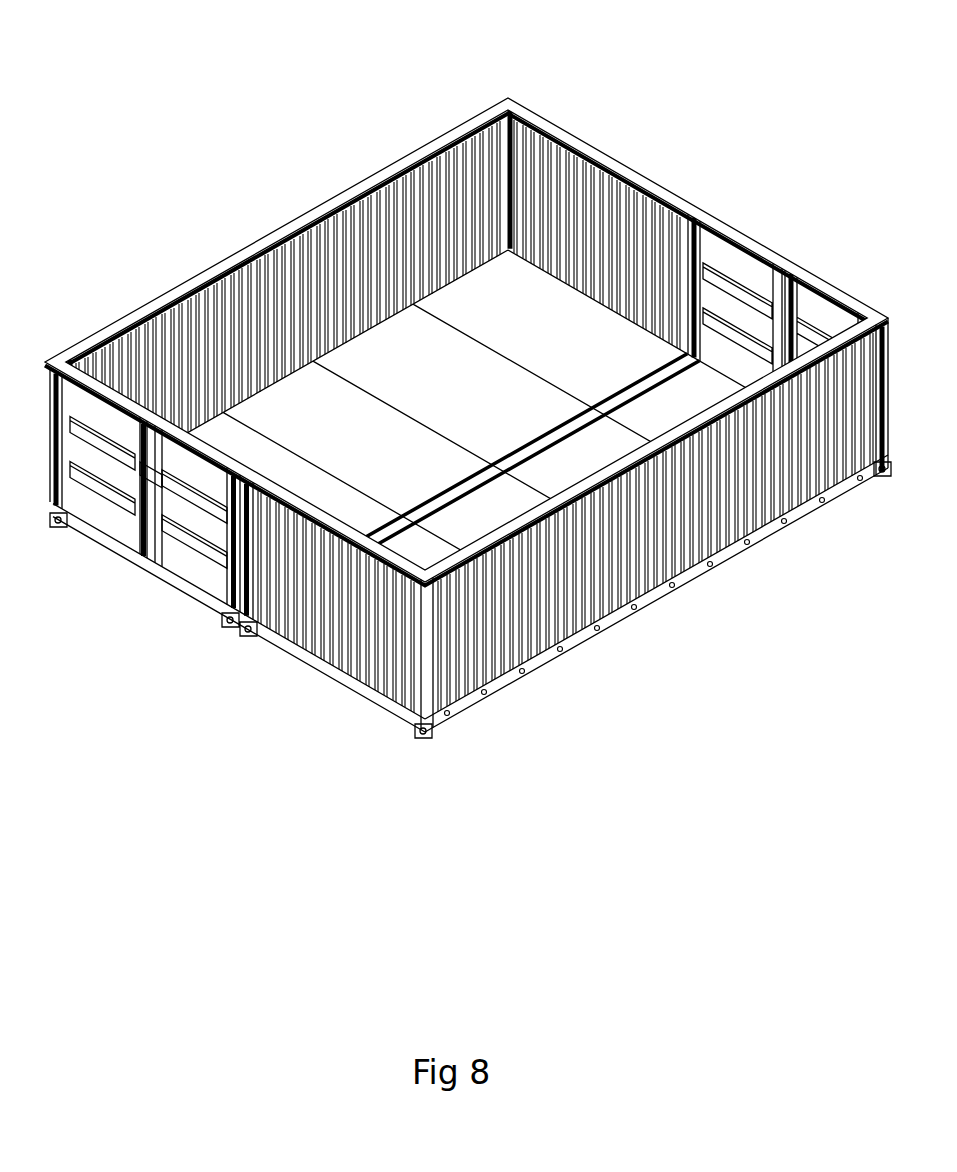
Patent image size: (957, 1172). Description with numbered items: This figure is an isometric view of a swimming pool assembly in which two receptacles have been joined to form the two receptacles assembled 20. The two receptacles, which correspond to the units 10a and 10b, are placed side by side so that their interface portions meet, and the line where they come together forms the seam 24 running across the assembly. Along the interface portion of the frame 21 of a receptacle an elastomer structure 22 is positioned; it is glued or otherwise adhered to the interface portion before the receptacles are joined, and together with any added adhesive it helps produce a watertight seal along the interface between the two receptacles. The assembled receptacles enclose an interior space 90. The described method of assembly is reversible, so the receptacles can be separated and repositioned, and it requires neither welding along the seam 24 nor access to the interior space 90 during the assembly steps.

The two receptacles assembled 20 is at (460, 390).
The frame 21 is at (262, 242).
The seam 24 is at (620, 387).
The interior space 90 is at (508, 305).
The first container module 10a is at (122, 518).
The second container module 10b is at (377, 673).
The elastomer structure 22 is at (237, 633).